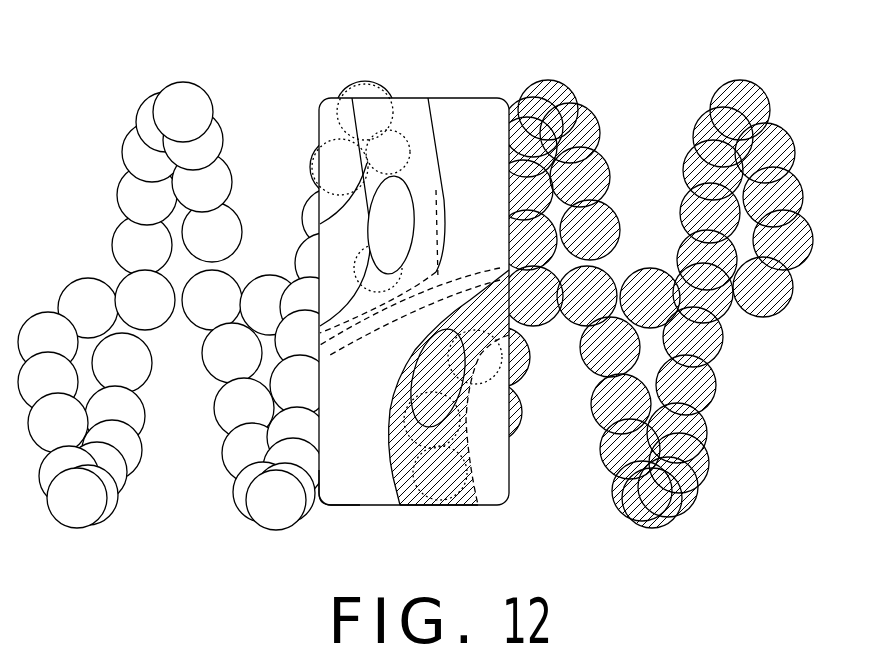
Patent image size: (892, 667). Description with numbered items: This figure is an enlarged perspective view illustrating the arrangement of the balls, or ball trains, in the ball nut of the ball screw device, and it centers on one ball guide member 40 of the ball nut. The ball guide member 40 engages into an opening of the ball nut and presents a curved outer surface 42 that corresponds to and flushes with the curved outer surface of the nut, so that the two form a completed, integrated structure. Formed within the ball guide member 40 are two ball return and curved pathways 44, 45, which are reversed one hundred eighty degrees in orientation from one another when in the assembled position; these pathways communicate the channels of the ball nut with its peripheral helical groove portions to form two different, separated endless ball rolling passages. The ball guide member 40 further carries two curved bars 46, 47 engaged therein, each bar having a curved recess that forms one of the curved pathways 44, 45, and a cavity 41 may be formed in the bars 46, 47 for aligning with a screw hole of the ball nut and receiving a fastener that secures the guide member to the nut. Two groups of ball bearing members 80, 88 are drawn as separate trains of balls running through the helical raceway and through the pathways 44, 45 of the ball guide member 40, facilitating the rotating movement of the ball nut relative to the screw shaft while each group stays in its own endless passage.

The ball guide member 40 is at (470, 98).
The cavity 41 is at (383, 200).
The curved outer surface 42 is at (348, 487).
The ball return and curved pathway 44 is at (417, 505).
The ball return and curved pathway 45 is at (415, 98).
The curved bar 46 is at (483, 360).
The curved bar 47 is at (364, 108).
The ball bearing members 80 is at (578, 100).
The ball bearing members 88 is at (190, 98).